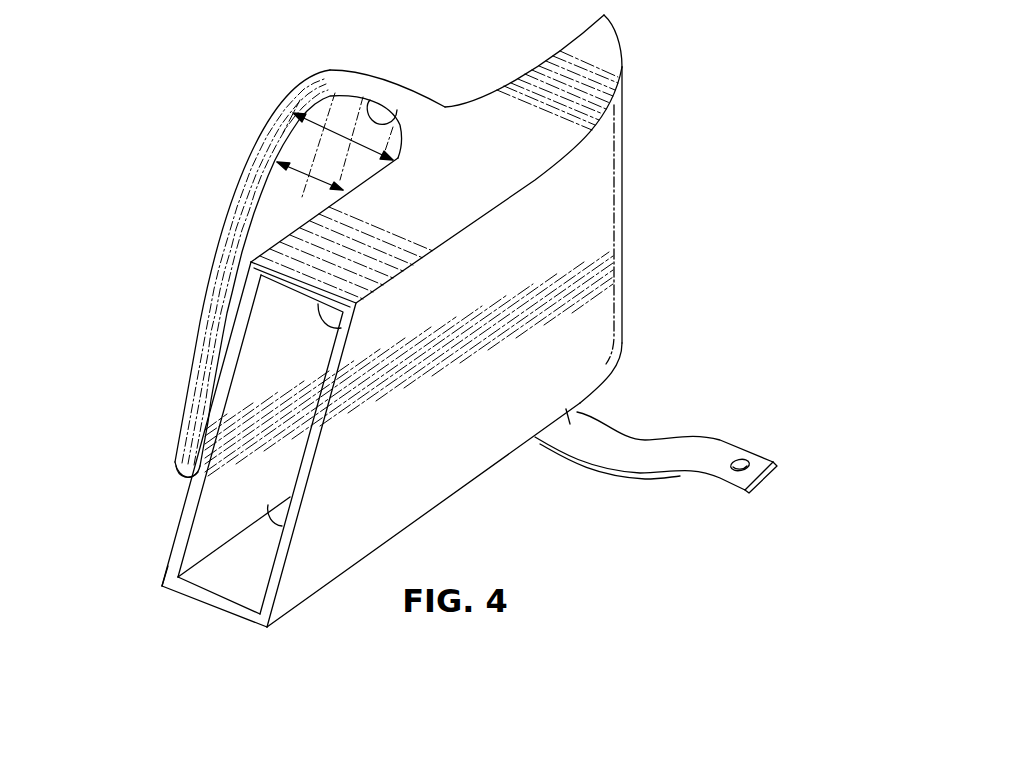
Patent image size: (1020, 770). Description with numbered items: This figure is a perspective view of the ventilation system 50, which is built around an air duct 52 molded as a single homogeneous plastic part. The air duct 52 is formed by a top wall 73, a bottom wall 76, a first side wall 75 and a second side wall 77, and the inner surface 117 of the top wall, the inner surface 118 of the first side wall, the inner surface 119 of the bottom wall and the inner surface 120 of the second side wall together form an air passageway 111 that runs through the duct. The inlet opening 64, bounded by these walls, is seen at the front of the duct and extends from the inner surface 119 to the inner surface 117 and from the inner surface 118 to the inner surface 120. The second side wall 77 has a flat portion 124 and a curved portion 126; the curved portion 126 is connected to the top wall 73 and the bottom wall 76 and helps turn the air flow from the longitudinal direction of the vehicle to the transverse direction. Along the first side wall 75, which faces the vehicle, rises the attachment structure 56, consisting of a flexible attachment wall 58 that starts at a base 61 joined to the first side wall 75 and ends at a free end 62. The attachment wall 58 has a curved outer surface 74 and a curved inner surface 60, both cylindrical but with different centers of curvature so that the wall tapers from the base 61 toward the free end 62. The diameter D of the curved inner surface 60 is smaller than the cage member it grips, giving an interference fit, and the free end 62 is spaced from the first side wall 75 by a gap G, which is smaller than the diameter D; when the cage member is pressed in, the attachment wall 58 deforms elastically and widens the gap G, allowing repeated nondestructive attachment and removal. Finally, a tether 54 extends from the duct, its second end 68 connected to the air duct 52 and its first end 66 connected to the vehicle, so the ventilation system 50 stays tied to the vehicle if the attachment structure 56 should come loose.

The ventilation system 50 is at (464, 336).
The air duct 52 is at (634, 180).
The tether 54 is at (687, 470).
The attachment structure 56 is at (287, 80).
The flexible attachment wall 58 is at (310, 72).
The curved inner surface 60 is at (397, 110).
The base 61 is at (443, 122).
The free end 62 is at (173, 473).
The inlet opening 64 is at (243, 330).
The first end 66 is at (767, 477).
The second end 68 is at (568, 421).
The top wall 73 is at (607, 60).
The curved outer surface 74 is at (333, 70).
The first side wall 75 is at (172, 566).
The bottom wall 76 is at (238, 618).
The second side wall 77 is at (437, 496).
The air passageway 111 is at (210, 510).
The inner surface of the top wall 117 is at (318, 305).
The inner surface of the first side wall 118 is at (170, 584).
The inner surface of the bottom wall 119 is at (215, 580).
The inner surface of the second side wall 120 is at (282, 522).
The flat portion 124 is at (490, 228).
The curved portion 126 is at (625, 128).
The diameter of the inner curved surface D is at (360, 105).
The gap G is at (302, 180).